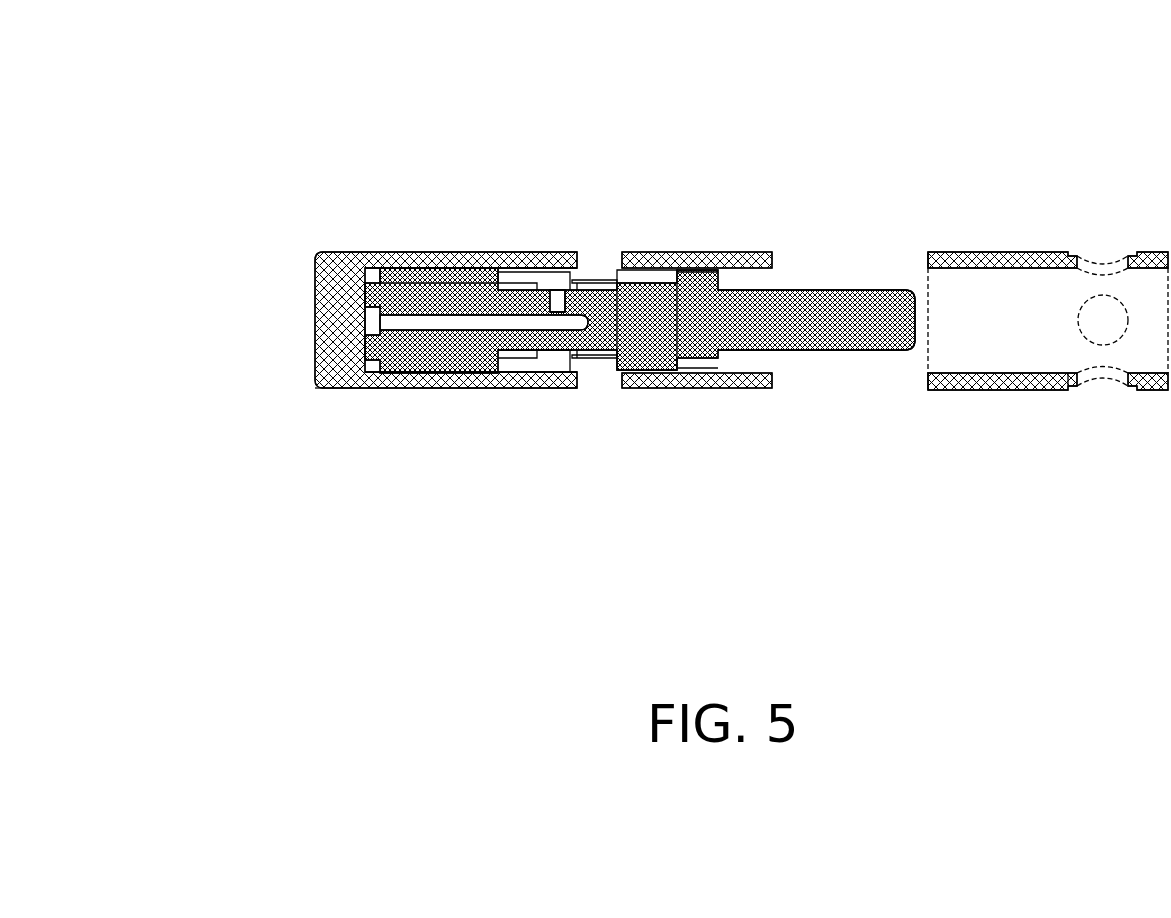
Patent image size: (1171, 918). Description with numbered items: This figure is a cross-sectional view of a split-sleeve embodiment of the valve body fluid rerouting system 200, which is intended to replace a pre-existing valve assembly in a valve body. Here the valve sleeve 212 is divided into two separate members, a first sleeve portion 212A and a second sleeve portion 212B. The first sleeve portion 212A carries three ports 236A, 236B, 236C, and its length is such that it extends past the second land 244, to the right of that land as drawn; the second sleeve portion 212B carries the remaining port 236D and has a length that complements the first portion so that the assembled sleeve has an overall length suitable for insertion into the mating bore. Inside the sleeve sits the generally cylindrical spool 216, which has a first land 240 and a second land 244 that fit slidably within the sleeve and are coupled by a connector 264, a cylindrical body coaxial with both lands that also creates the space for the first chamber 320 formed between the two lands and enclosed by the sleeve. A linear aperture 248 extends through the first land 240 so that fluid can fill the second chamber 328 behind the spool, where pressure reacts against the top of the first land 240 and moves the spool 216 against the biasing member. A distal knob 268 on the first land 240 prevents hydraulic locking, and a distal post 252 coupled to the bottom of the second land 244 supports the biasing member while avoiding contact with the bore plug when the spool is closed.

The valve body fluid rerouting system 200 is at (907, 118).
The valve sleeve 212 is at (926, 194).
The first sleeve portion 212A is at (490, 250).
The second sleeve portion 212B is at (1048, 326).
The spool 216 is at (452, 380).
The port 236A is at (538, 256).
The port 236B is at (580, 278).
The port 236C is at (722, 262).
The port 236D is at (1122, 345).
The first land 240 is at (410, 390).
The second land 244 is at (668, 268).
The aperture 248 is at (562, 300).
The distal post 252 is at (808, 352).
The connector 264 is at (617, 380).
The distal knob 268 is at (320, 253).
The first chamber 320 is at (547, 370).
The second chamber 328 is at (366, 380).